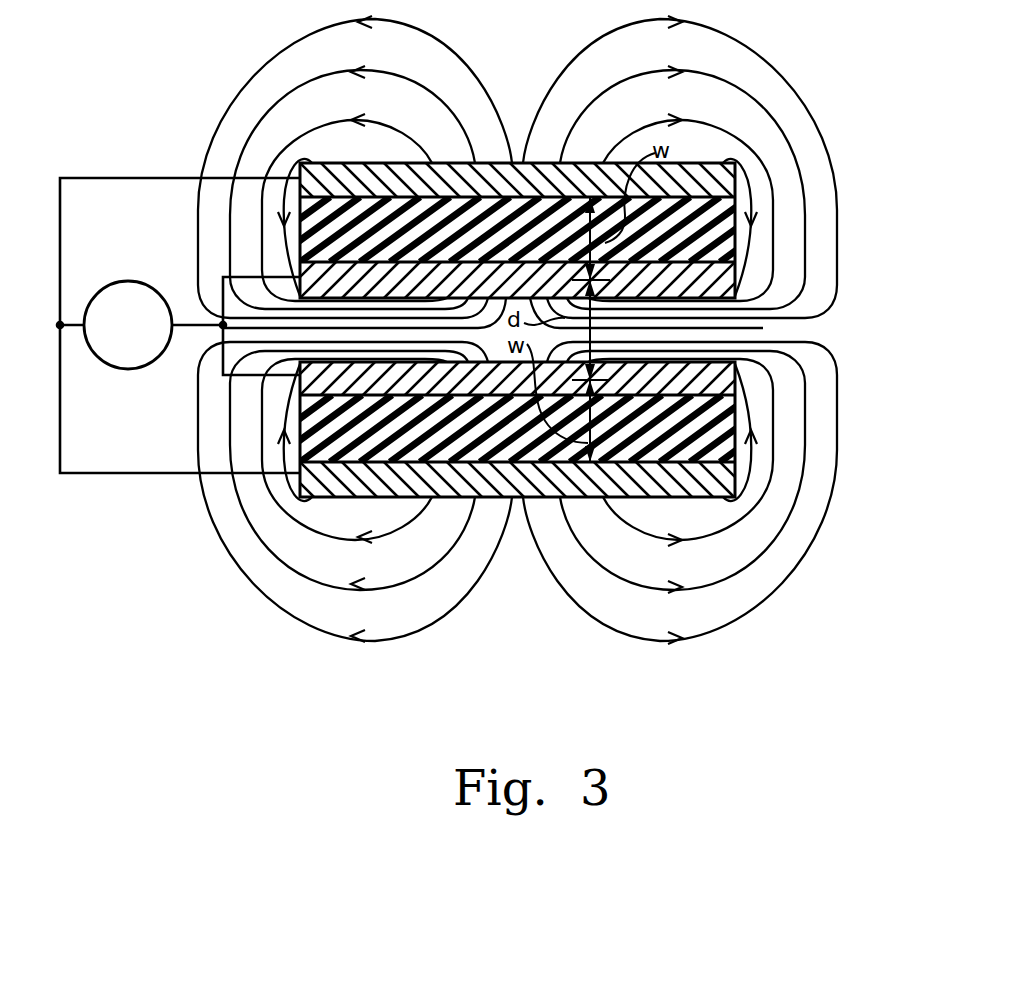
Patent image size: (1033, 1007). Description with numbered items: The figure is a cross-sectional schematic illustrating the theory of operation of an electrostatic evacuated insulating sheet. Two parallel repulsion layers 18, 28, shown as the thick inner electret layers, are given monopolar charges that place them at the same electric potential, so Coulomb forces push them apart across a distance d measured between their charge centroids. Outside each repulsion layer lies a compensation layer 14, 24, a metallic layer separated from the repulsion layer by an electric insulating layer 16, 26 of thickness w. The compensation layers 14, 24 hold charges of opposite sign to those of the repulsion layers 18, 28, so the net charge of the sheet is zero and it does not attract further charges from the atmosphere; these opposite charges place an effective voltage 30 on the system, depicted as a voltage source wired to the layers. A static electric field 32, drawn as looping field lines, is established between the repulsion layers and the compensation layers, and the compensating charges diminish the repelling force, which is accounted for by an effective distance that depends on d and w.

The compensation layer 14 is at (728, 177).
The electric insulating layer 16 is at (710, 238).
The repulsion layer 18 is at (262, 287).
The compensation layer 24 is at (717, 470).
The electric insulating layer 26 is at (708, 397).
The repulsion layer 28 is at (262, 370).
The effective voltage 30 is at (128, 370).
The static electric field 32 is at (547, 97).